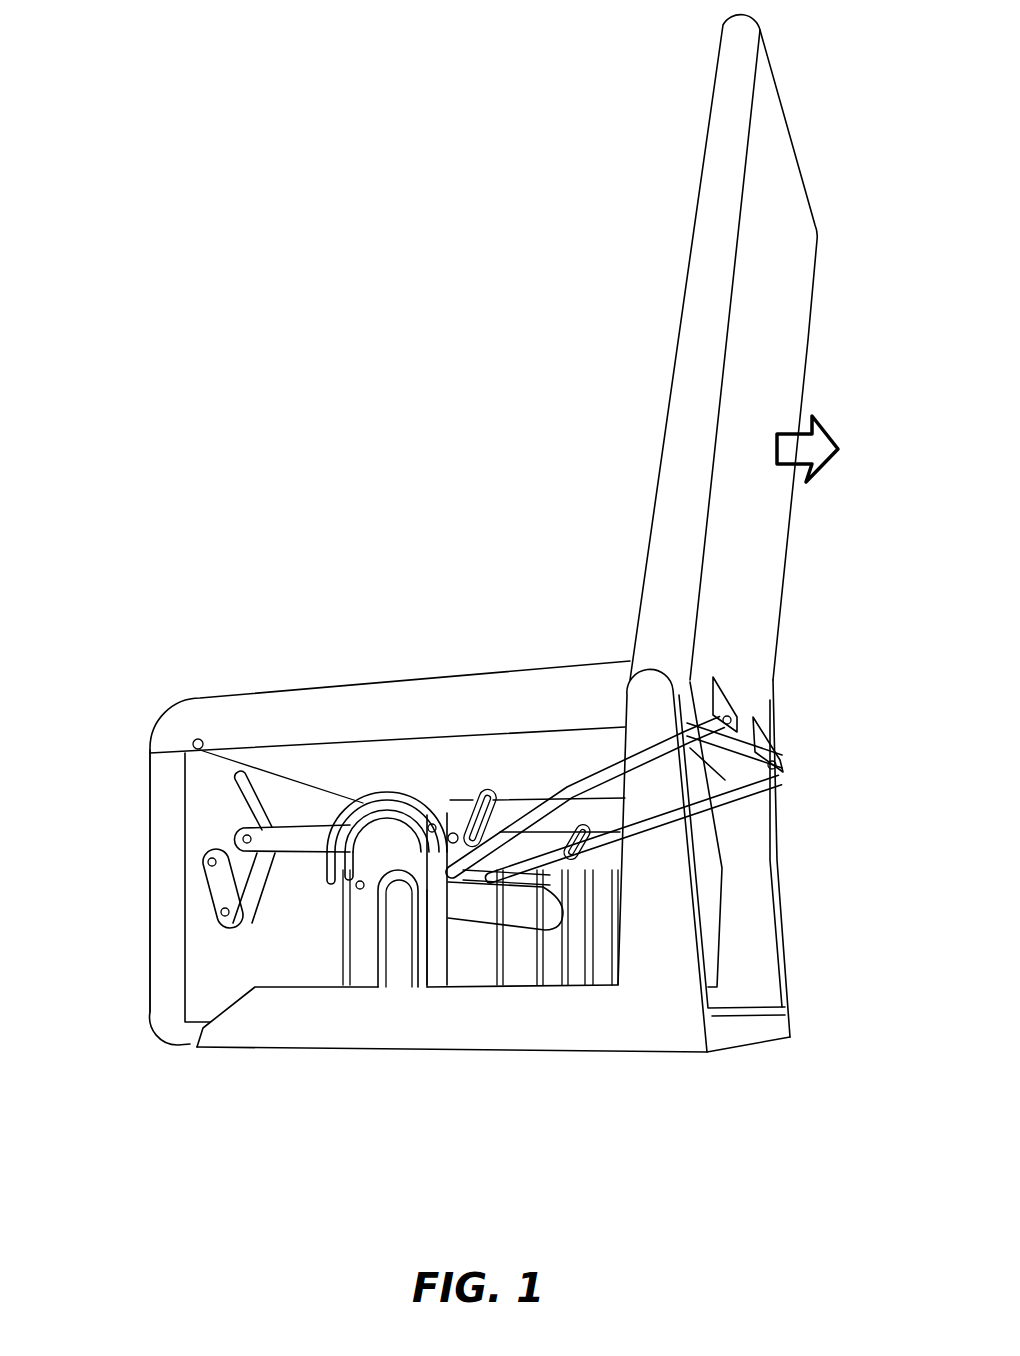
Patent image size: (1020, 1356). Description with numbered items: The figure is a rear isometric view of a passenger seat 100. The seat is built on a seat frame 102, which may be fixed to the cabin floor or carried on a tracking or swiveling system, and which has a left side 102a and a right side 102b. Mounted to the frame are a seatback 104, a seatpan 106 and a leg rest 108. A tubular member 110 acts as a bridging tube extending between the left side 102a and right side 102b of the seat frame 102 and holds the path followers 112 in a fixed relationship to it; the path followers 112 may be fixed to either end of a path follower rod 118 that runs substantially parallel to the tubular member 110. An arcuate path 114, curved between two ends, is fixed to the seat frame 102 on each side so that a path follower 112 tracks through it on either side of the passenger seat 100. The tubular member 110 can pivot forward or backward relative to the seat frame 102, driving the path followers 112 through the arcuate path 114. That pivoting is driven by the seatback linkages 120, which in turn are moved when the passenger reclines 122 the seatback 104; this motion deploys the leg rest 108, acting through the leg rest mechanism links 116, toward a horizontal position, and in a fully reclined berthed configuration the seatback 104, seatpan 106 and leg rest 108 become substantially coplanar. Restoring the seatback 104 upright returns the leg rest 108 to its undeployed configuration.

The passenger seat 100 is at (160, 76).
The seat frame 102 is at (655, 977).
The left side of the seat frame 102a is at (398, 977).
The right side of the seat frame 102b is at (555, 957).
The seatback 104 is at (702, 358).
The seatpan 106 is at (530, 700).
The leg rest 108 is at (163, 890).
The tubular member 110 is at (472, 902).
The path followers 112 is at (430, 823).
The arcuate path 114 is at (363, 810).
The leg rest mechanism links 116 is at (305, 832).
The path follower rod 118 is at (505, 838).
The seatback linkages 120 is at (747, 775).
The reclining motion 122 is at (797, 447).